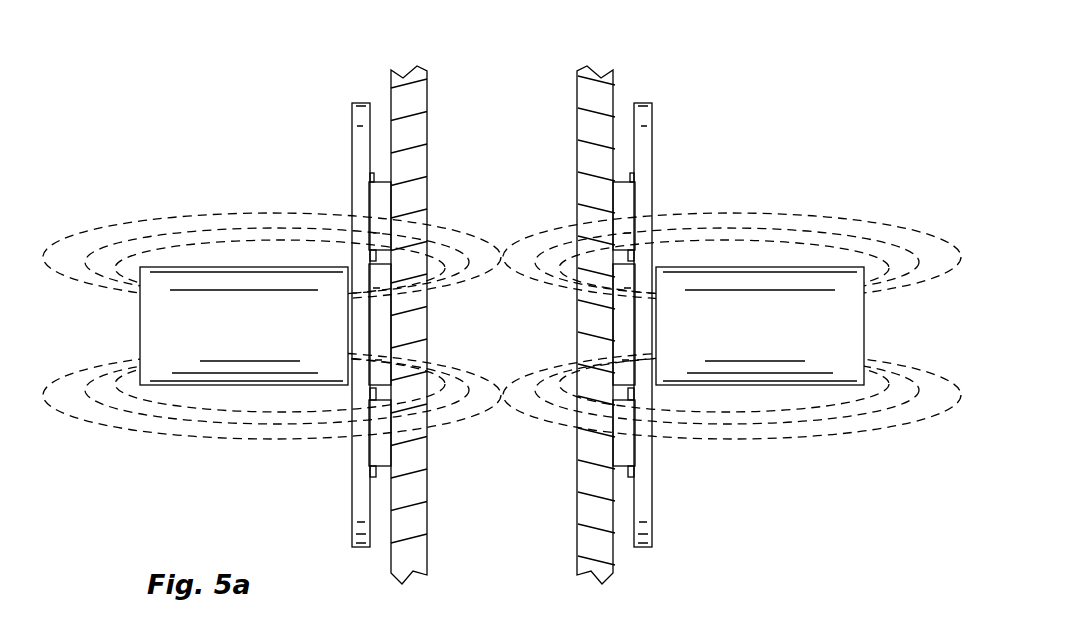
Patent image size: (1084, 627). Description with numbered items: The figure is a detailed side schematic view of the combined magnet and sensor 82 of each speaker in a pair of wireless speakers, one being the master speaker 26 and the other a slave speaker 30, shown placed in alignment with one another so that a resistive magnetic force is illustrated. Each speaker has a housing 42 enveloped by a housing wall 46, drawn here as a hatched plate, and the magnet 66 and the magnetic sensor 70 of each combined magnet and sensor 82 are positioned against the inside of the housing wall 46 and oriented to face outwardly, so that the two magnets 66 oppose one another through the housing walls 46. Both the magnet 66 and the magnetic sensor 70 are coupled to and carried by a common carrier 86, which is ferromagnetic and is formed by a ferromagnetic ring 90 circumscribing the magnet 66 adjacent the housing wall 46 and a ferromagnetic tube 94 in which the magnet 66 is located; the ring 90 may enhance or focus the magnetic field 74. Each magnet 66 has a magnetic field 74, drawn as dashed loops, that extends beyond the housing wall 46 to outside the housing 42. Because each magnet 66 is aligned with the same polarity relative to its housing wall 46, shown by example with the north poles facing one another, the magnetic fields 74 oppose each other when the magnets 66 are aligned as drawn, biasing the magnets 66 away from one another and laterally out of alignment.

The master speaker 26 is at (390, 562).
The slave speaker 30 is at (617, 567).
The housing 42 is at (402, 583).
The housing wall 46 is at (405, 72).
The magnet 66 is at (210, 340).
The magnetic sensor 70 is at (369, 204).
The magnetic field 74 is at (207, 217).
The combined magnet and sensor 82 is at (273, 372).
The common carrier 86 is at (357, 470).
The ferromagnetic ring 90 is at (352, 118).
The ferromagnetic tube 94 is at (152, 265).